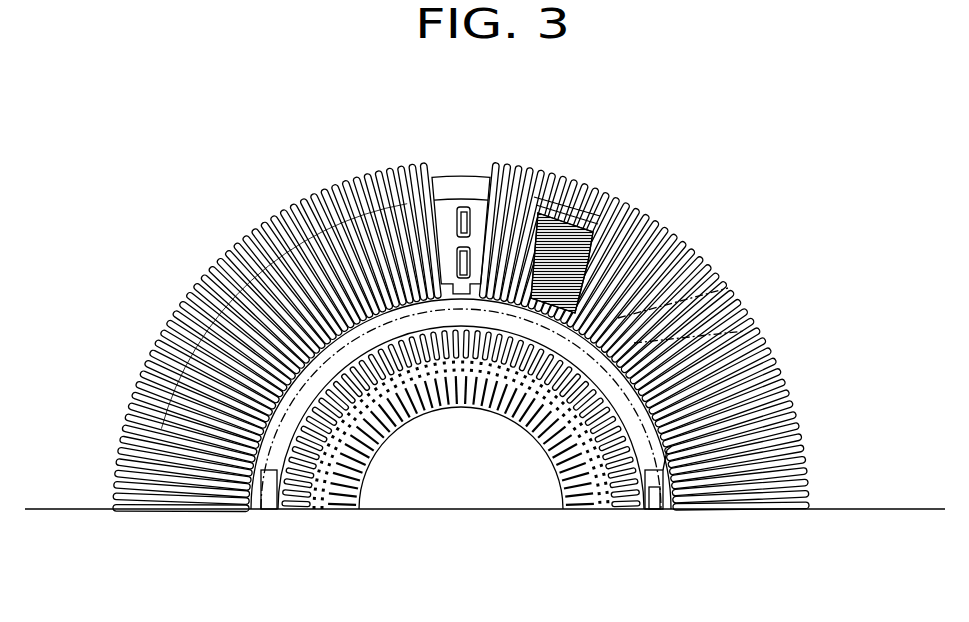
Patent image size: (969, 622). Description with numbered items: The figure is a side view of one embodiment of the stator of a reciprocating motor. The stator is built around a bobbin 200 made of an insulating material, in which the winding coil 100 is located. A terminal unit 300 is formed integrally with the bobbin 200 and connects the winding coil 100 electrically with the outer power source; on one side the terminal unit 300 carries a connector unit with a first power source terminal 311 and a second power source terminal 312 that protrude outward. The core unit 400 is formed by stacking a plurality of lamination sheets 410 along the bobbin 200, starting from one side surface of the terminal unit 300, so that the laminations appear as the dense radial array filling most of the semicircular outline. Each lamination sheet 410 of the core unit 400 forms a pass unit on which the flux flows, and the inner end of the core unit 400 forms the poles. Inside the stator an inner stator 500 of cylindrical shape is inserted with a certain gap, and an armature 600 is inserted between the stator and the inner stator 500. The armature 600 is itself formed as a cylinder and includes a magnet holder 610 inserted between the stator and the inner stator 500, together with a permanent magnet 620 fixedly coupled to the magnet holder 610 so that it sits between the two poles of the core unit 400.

The winding coil 100 is at (578, 232).
The bobbin 200 is at (560, 192).
The terminal unit 300 is at (391, 192).
The first power source terminal 311 is at (457, 263).
The second power source terminal 312 is at (457, 222).
The core unit 400 is at (768, 334).
The lamination sheet 410 is at (722, 287).
The inner stator 500 is at (372, 477).
The armature 600 is at (256, 487).
The magnet holder 610 is at (628, 492).
The permanent magnet 620 is at (668, 452).